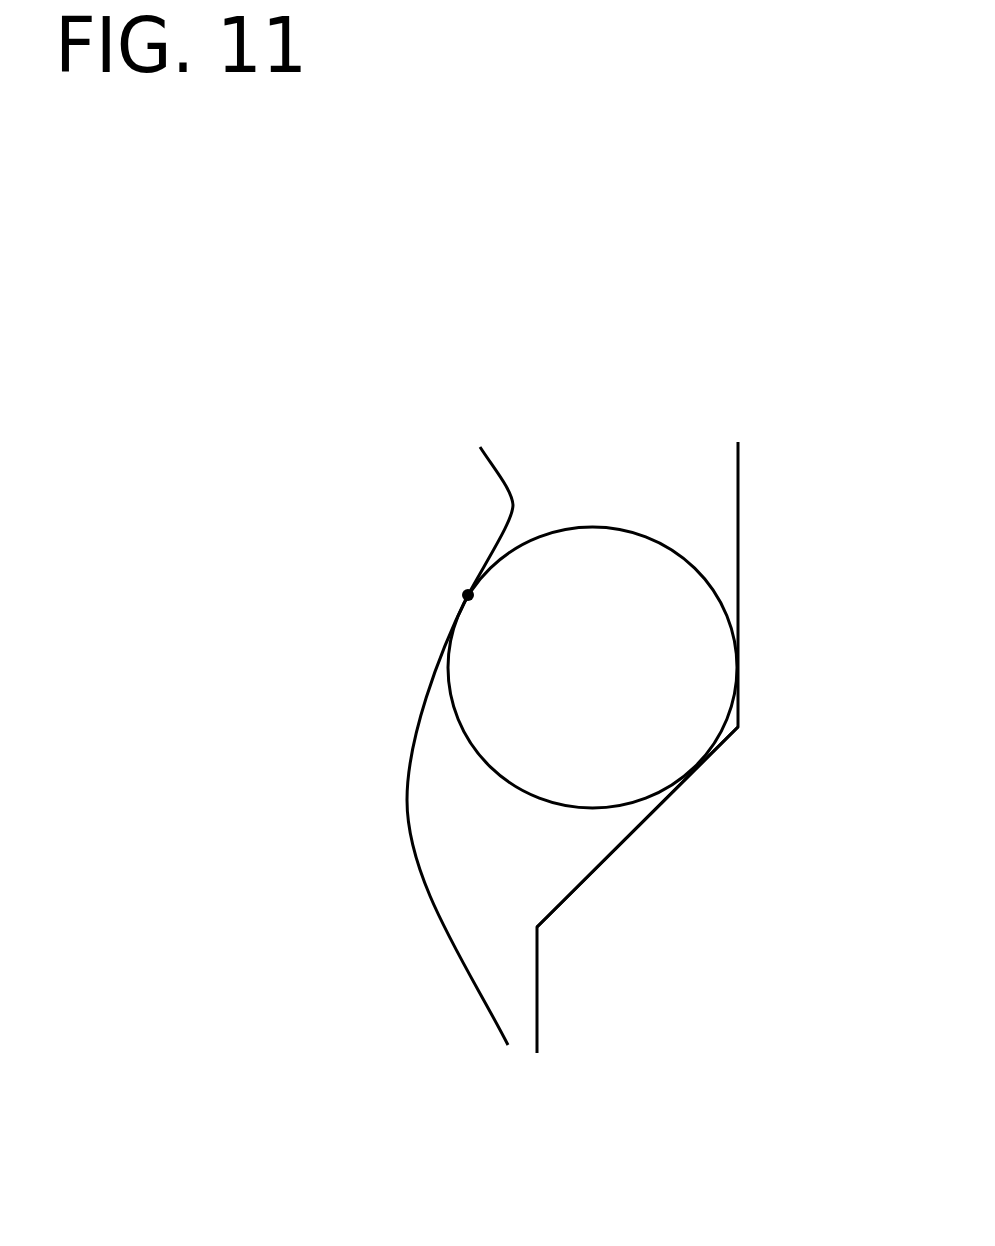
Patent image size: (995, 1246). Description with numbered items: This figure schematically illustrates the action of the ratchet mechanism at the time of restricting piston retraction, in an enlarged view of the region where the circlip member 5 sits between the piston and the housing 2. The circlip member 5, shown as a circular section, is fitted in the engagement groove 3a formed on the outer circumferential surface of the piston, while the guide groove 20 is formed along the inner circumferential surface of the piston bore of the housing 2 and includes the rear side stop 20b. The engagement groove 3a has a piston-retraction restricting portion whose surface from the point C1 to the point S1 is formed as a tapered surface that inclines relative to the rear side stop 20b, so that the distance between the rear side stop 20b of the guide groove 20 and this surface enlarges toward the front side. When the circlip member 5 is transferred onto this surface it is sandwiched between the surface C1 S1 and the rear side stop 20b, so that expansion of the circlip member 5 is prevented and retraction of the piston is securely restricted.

The circlip member 5 is at (615, 692).
The guide groove 20 is at (712, 529).
The rear side stop 20b is at (608, 866).
The engagement groove 3a is at (447, 946).
The surface end point S1 is at (521, 521).
The contact point C1 is at (445, 568).
The housing 2 is at (785, 1047).